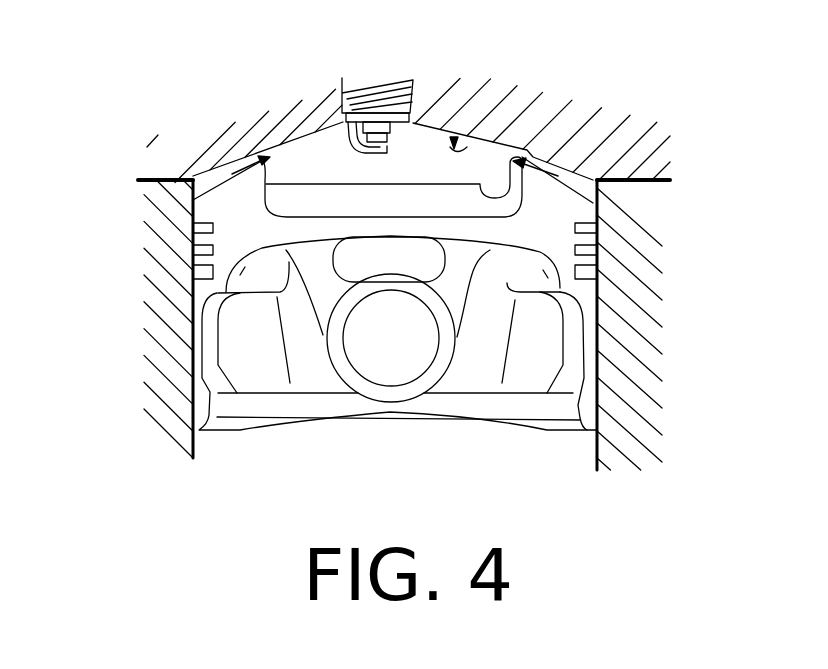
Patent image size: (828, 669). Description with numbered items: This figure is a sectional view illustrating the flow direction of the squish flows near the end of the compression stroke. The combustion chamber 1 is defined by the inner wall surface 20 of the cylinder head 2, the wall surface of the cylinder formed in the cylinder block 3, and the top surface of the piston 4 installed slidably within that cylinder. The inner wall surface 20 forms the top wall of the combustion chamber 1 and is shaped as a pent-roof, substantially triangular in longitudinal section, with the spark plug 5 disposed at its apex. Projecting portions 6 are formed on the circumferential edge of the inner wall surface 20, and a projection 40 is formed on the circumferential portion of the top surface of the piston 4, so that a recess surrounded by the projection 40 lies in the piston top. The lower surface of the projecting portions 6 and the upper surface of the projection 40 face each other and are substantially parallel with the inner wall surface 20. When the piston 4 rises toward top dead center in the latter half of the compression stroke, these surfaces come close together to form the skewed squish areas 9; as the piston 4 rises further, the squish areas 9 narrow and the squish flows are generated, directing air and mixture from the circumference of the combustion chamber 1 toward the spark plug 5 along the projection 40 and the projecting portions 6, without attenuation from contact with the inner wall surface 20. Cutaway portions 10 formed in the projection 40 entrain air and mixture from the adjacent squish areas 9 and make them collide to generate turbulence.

The combustion chamber 1 is at (317, 153).
The cylinder head 2 is at (473, 100).
The cylinder block 3 is at (637, 273).
The piston 4 is at (482, 360).
The spark plug 5 is at (372, 95).
The projecting portions 6 is at (253, 153).
The squish area 9 is at (210, 173).
The cutaway portions 10 is at (497, 193).
The inner wall surface 20 is at (460, 150).
The projection 40 is at (220, 200).